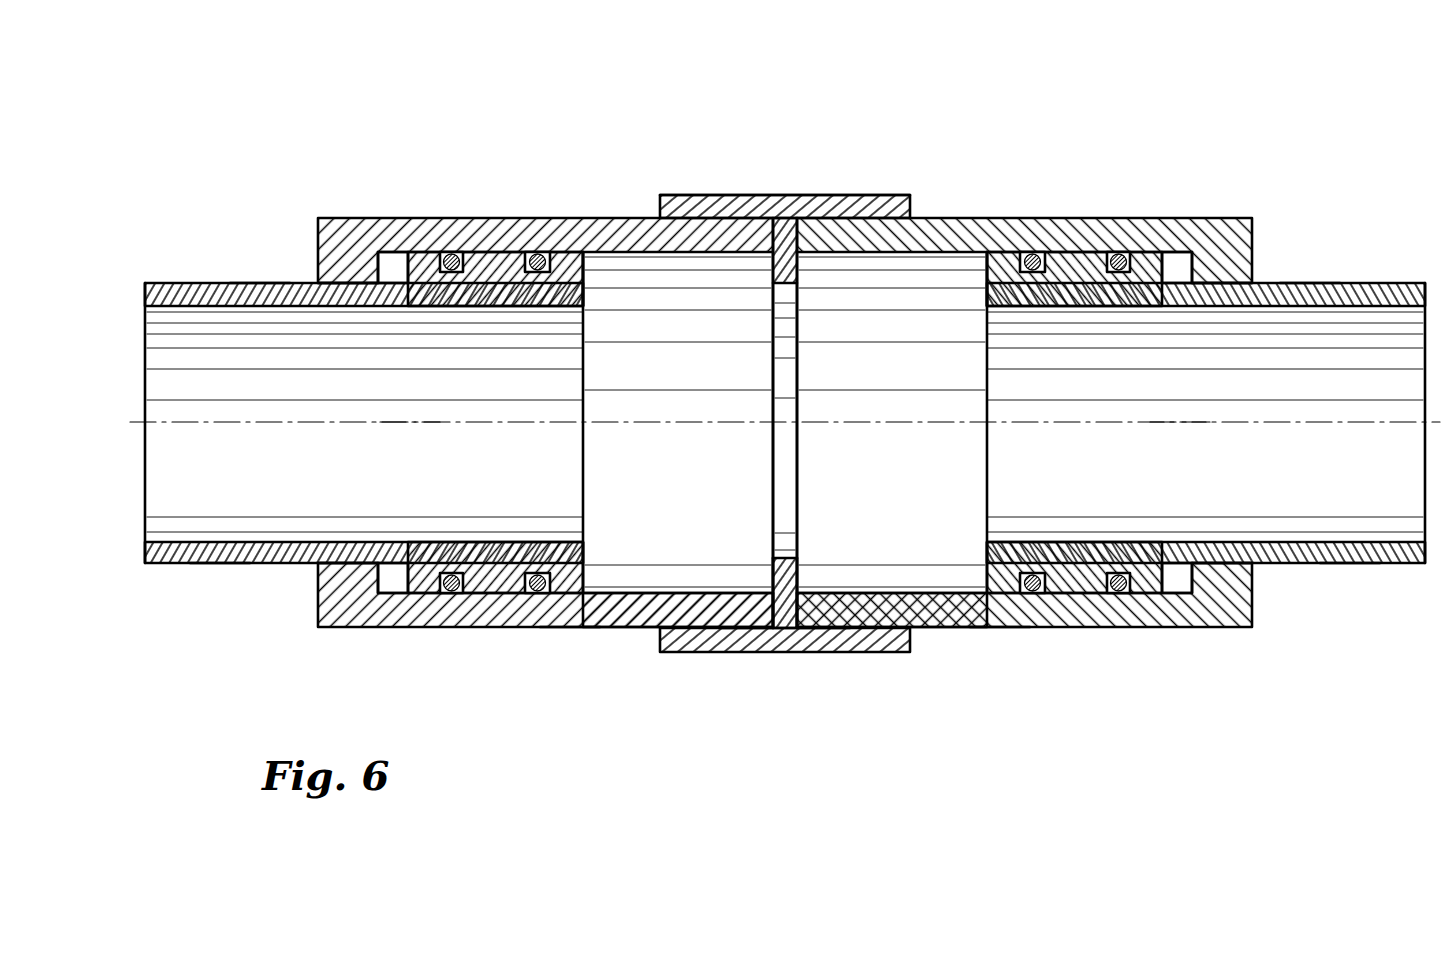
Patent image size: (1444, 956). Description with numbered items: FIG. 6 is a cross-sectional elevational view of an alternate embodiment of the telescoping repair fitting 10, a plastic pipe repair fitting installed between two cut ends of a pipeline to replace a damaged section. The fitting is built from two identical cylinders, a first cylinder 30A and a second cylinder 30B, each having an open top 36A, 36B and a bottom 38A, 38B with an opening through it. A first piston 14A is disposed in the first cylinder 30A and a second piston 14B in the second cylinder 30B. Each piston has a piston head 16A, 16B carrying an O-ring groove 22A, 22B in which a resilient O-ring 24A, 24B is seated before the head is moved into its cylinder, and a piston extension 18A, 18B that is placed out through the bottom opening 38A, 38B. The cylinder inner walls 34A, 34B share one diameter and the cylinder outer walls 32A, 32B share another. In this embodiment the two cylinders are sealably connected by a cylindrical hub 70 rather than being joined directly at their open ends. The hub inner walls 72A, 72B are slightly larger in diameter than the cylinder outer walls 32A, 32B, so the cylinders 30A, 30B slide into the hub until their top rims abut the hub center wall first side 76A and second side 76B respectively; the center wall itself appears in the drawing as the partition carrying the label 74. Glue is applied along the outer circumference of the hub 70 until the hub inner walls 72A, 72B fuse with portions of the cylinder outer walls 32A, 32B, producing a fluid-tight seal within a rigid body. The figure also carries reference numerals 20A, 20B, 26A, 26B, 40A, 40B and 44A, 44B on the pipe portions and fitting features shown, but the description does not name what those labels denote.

The telescoping repair fitting 10 is at (922, 185).
The first piston 14A is at (258, 283).
The second piston 14B is at (1300, 283).
The piston head 16A is at (588, 278).
The piston head 16B is at (985, 280).
The piston extension 18A is at (215, 563).
The piston extension 18B is at (1370, 563).
The first pipe 20A is at (163, 283).
The second pipe 20B is at (1405, 283).
The O-ring groove 22A is at (533, 258).
The O-ring groove 22B is at (1115, 258).
The resilient O-ring 24A is at (533, 595).
The resilient O-ring 24B is at (1120, 595).
The first annular recess 26A is at (385, 262).
The second annular recess 26B is at (1178, 262).
The first cylinder 30A is at (562, 627).
The second cylinder 30B is at (1005, 627).
The cylinder outer wall 32A is at (637, 628).
The cylinder outer wall 32B is at (940, 628).
The cylinder inner wall 34A is at (668, 597).
The cylinder inner wall 34B is at (882, 597).
The open top 36A is at (773, 471).
The open top 36B is at (797, 492).
The cylinder bottom 38A is at (305, 565).
The cylinder bottom 38B is at (1285, 565).
The first coupling body 40A is at (318, 257).
The second coupling body 40B is at (1252, 257).
The first flow passage axis 44A is at (408, 422).
The second flow passage axis 44B is at (1185, 422).
The cylindrical hub 70 is at (770, 660).
The hub inner wall 72A is at (742, 628).
The hub inner wall 72B is at (880, 630).
The central partition wall 74 is at (785, 556).
The hub center wall first side 76A is at (771, 582).
The hub center wall second side 76B is at (799, 582).